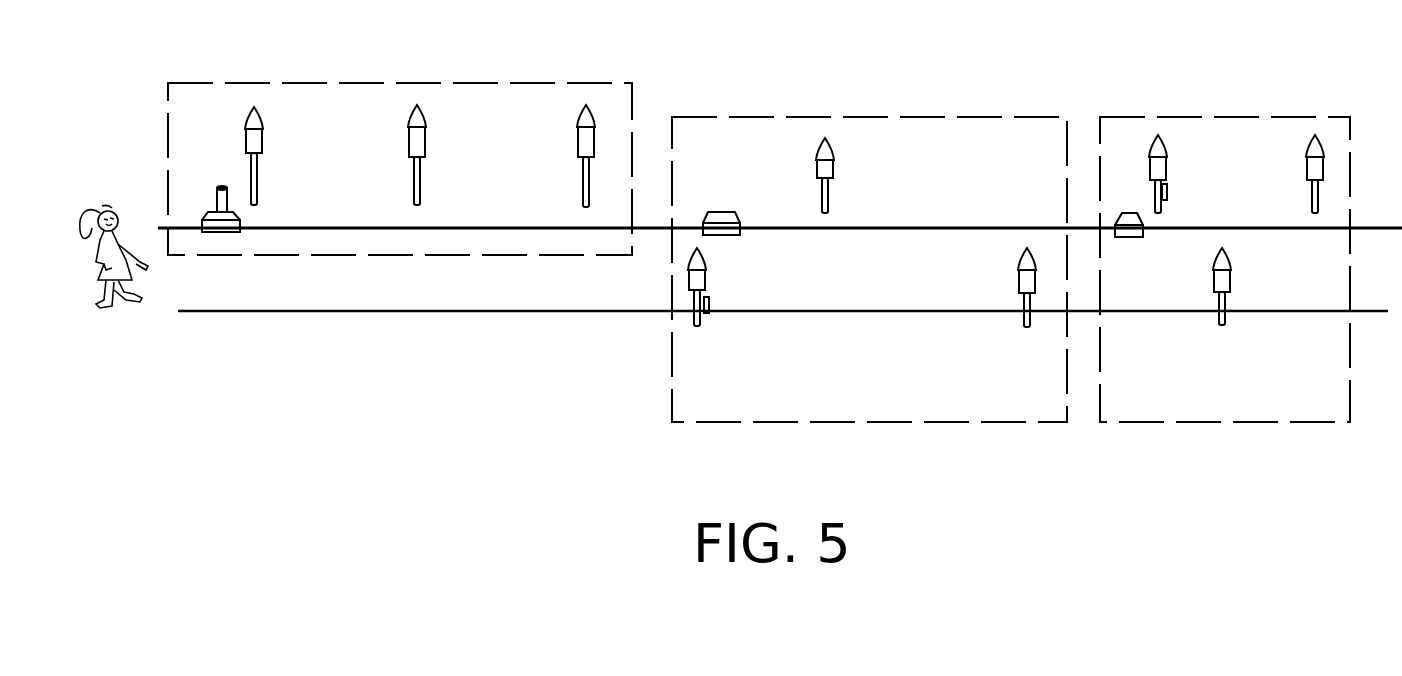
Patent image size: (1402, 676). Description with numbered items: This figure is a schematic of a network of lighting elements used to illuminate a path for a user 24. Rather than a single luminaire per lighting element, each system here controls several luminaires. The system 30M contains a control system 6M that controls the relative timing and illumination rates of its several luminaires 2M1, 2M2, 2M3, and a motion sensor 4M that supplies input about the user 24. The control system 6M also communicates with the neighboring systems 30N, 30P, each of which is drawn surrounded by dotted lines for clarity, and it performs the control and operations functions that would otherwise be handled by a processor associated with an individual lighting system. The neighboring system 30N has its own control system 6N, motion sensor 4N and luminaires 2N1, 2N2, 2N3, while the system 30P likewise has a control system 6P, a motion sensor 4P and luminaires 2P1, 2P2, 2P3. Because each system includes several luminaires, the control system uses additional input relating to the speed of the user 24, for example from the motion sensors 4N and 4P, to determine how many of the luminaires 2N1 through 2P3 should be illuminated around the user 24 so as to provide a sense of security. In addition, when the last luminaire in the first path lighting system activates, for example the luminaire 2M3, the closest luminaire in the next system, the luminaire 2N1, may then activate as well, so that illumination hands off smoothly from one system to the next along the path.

The system 30M is at (400, 82).
The neighboring system 30N is at (752, 113).
The neighboring system 30P is at (1225, 115).
The luminaire 2M1 is at (265, 145).
The luminaire 2M2 is at (428, 147).
The luminaire 2M3 is at (577, 145).
The luminaire 2N1 is at (707, 258).
The luminaire 2N2 is at (833, 150).
The luminaire 2N3 is at (1018, 262).
The luminaire 2P1 is at (1163, 145).
The luminaire 2P2 is at (1230, 262).
The luminaire 2P3 is at (1307, 170).
The motion sensor 4M is at (240, 217).
The motion sensor 4N is at (722, 210).
The motion sensor 4P is at (1130, 240).
The control system 6M is at (217, 193).
The control system 6N is at (709, 302).
The control system 6P is at (1168, 192).
The user 24 is at (105, 310).